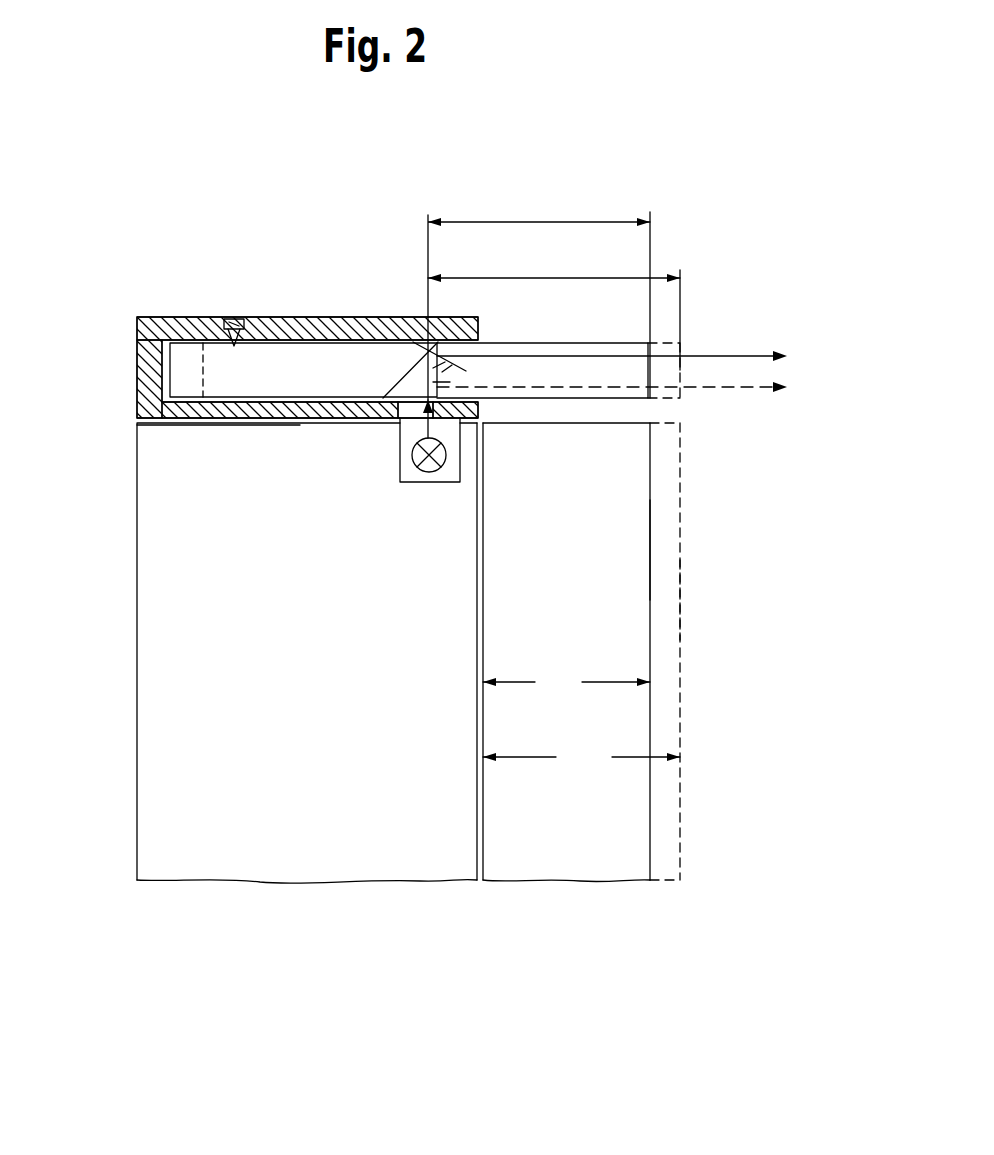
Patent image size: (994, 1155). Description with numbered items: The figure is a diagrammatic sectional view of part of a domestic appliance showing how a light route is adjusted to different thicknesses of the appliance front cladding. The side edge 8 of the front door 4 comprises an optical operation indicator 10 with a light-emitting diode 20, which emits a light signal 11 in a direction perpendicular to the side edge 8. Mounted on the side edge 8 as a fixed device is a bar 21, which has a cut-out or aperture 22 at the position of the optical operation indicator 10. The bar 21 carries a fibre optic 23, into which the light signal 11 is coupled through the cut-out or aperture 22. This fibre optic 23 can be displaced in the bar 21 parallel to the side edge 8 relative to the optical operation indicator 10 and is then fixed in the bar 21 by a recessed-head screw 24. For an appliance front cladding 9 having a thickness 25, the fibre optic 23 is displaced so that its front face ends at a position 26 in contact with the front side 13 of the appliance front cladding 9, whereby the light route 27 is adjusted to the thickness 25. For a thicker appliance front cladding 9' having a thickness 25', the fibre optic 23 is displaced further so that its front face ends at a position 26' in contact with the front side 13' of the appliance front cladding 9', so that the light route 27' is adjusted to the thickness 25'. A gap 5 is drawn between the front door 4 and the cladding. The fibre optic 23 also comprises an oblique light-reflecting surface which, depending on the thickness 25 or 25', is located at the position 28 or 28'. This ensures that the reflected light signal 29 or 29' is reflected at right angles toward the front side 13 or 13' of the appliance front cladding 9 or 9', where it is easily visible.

The front door 4 is at (282, 865).
The gap between panels 5 is at (470, 840).
The side edge 8 is at (212, 430).
The appliance front cladding 9 is at (566, 698).
The appliance front cladding 9' is at (684, 698).
The optical operation indicator 10 is at (398, 486).
The light signal 11 is at (415, 425).
The front side 13 is at (713, 550).
The front side 13' is at (757, 600).
The light-emitting diode 20 is at (432, 473).
The bar 21 is at (142, 365).
The cut-out or aperture 22 is at (450, 418).
The fibre optic 23 is at (283, 363).
The recessed-head screw 24 is at (226, 317).
The thickness 25 is at (566, 681).
The thickness 25' is at (581, 756).
The position 26 is at (703, 335).
The position 26' is at (721, 316).
The light route 27 is at (539, 270).
The light route 27' is at (554, 256).
The position of oblique light-reflecting surface 28 is at (389, 315).
The position of oblique light-reflecting surface 28' is at (418, 282).
The reflected light signal 29 is at (645, 335).
The reflected light signal 29' is at (653, 367).